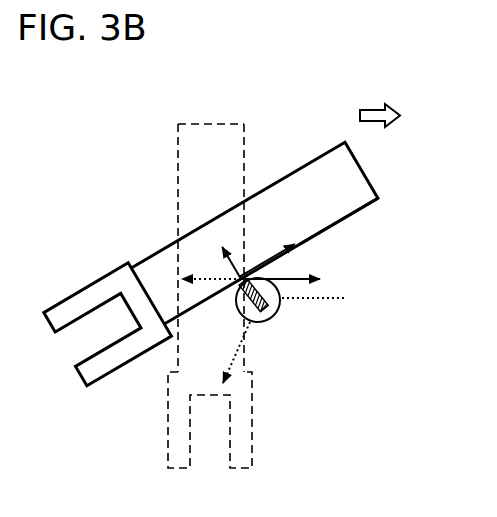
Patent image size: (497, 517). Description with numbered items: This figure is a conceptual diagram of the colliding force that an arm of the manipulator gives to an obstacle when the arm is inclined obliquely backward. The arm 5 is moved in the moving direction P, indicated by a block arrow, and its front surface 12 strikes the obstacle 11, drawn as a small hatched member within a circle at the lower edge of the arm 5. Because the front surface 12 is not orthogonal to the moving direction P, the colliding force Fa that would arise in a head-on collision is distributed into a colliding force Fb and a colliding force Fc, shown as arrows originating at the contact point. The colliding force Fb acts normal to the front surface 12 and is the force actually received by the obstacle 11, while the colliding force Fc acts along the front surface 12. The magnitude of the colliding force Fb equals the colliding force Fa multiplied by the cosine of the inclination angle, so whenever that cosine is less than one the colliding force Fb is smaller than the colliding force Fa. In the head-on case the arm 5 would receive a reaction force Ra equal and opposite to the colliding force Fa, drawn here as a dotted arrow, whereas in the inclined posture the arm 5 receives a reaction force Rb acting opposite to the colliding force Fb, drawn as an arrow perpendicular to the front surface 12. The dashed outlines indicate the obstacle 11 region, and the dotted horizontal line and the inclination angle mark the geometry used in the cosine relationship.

The arm 5 is at (333, 207).
The front surface 12 is at (333, 228).
The obstacle 11 is at (277, 303).
The colliding force Fa is at (323, 282).
The colliding force Fb is at (258, 322).
The colliding force Fc is at (266, 262).
The reaction force Ra is at (213, 275).
The reaction force Rb is at (245, 272).
The moving direction P is at (388, 117).